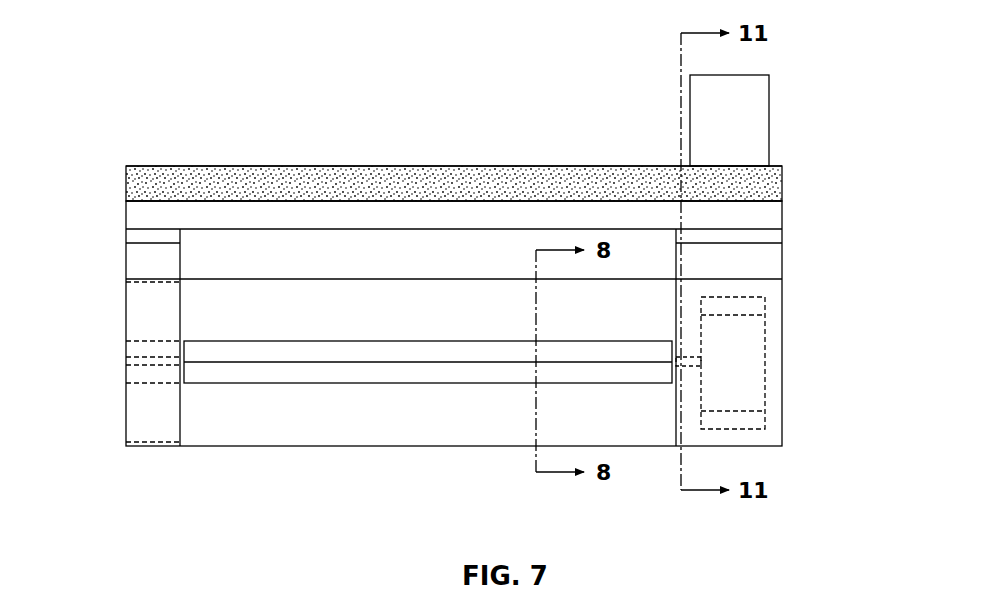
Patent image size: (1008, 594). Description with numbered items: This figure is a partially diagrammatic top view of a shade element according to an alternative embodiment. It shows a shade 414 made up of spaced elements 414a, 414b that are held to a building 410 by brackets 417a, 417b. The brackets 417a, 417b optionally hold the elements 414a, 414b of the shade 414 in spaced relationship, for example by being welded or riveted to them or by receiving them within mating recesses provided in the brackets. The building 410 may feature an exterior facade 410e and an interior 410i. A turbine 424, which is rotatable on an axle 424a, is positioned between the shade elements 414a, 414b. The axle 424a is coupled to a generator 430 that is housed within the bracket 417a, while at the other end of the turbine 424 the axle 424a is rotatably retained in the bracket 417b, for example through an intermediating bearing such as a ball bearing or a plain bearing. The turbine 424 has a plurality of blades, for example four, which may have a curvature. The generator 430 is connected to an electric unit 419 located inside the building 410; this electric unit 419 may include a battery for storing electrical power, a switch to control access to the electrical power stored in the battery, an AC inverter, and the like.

The building 410 is at (301, 163).
The interior 410i is at (380, 173).
The exterior facade 410e is at (767, 215).
The shade 414 is at (497, 470).
The shade element 414a is at (445, 320).
The shade element 414b is at (357, 428).
The bracket 417a is at (767, 260).
The bracket 417b is at (133, 255).
The electric unit 419 is at (758, 118).
The turbine 424 is at (286, 371).
The axle 424a is at (691, 357).
The generator 430 is at (765, 386).